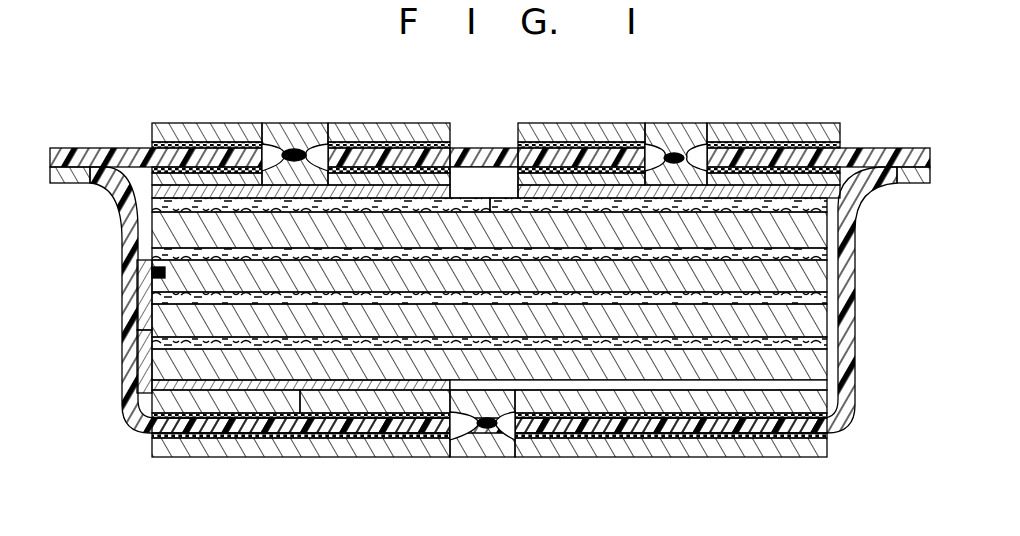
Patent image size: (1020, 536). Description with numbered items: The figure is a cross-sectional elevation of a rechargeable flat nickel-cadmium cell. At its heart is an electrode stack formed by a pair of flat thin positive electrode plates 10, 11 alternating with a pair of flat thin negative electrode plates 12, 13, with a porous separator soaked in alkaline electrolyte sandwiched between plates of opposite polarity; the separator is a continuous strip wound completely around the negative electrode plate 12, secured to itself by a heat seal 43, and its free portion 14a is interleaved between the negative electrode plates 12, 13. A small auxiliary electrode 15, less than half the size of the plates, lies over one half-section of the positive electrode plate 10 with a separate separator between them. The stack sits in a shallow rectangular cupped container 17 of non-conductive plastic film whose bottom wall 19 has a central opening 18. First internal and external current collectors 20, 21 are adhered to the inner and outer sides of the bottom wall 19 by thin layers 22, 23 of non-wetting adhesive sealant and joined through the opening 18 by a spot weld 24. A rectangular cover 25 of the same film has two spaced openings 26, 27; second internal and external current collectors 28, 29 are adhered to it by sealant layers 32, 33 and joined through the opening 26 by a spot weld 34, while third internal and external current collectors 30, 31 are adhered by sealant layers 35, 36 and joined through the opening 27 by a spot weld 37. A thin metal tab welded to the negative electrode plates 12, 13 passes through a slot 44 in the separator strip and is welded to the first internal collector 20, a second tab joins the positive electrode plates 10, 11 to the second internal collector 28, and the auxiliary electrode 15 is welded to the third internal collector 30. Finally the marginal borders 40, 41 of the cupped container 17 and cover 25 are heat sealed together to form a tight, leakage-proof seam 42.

The positive electrode plate 10 is at (820, 232).
The positive electrode plate 11 is at (830, 326).
The negative electrode plate 12 is at (816, 280).
The negative electrode plate 13 is at (822, 367).
The free portion of separator strip 14a is at (830, 345).
The auxiliary electrode 15 is at (423, 190).
The cupped container 17 is at (135, 389).
The opening 18 is at (462, 426).
The bottom wall 19 is at (296, 426).
The first internal current collector 20 is at (205, 400).
The first external current collector 21 is at (264, 446).
The adhesive sealant layer 22 is at (575, 421).
The adhesive sealant layer 23 is at (625, 438).
The spot weld 24 is at (495, 430).
The cover 25 is at (482, 138).
The opening 26 is at (656, 154).
The opening 27 is at (313, 150).
The second internal current collector 28 is at (775, 180).
The second external current collector 29 is at (735, 124).
The third internal current collector 30 is at (243, 176).
The third external current collector 31 is at (210, 122).
The adhesive sealant layer 32 is at (540, 130).
The adhesive sealant layer 33 is at (585, 143).
The spot weld 34 is at (678, 154).
The adhesive sealant layer 35 is at (354, 146).
The adhesive sealant layer 36 is at (390, 186).
The spot weld 37 is at (291, 147).
The marginal border 40 is at (92, 180).
The marginal border 41 is at (123, 146).
The seam 42 is at (897, 150).
The heat seal 43 is at (160, 300).
The slot 44 is at (155, 272).